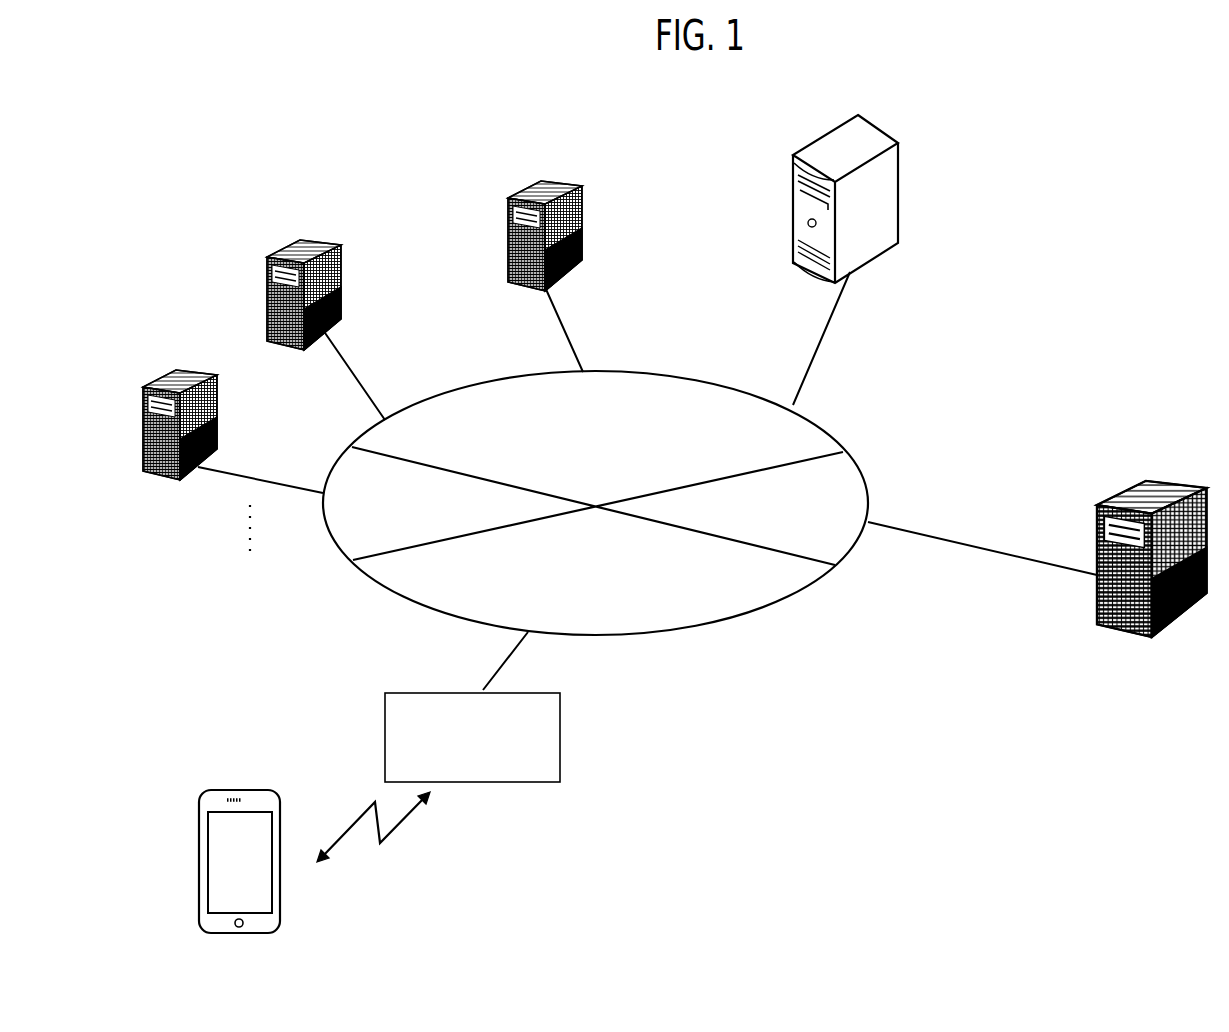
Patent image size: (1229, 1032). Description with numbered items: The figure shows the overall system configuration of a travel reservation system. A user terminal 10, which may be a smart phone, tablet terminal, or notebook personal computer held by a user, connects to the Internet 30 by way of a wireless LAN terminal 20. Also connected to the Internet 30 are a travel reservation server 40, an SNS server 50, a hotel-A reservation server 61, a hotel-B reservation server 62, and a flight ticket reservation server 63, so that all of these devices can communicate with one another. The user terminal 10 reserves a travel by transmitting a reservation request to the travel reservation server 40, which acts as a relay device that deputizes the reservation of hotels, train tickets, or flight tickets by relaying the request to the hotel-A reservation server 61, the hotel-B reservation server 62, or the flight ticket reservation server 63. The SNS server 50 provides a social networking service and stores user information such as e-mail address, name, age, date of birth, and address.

The user terminal 10 is at (233, 790).
The wireless LAN terminal 20 is at (560, 730).
The Internet 30 is at (788, 600).
The travel reservation server 40 is at (898, 188).
The SNS server 50 is at (1130, 482).
The hotel-A reservation server 61 is at (543, 185).
The hotel-B reservation server 62 is at (314, 243).
The flight ticket reservation server 63 is at (172, 382).